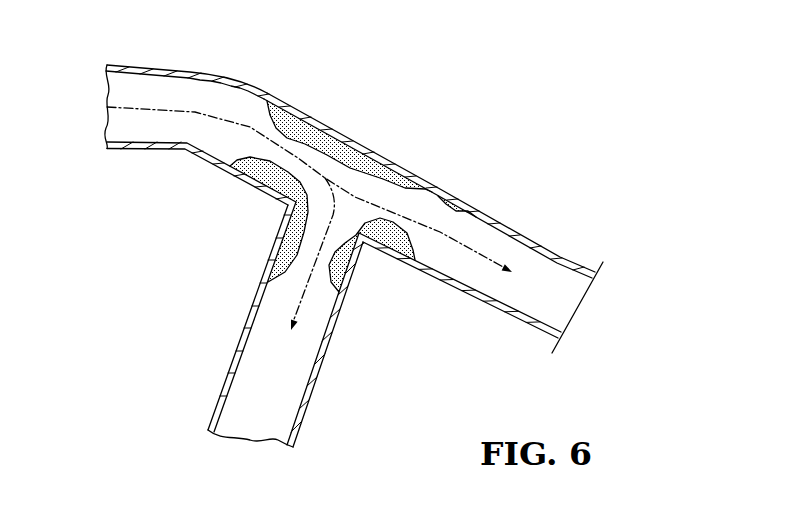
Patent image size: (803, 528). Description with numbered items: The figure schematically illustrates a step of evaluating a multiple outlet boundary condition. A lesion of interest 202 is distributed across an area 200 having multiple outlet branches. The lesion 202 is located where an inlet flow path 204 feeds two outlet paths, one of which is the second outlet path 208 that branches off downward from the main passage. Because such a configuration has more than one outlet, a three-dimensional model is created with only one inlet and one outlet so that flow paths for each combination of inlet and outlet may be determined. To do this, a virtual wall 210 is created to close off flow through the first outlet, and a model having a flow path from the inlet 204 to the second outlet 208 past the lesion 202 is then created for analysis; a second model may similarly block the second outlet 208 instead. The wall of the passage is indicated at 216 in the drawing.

The pipe assembly 200 is at (440, 152).
The deposits 202 is at (288, 244).
The inlet pipe 204 is at (148, 127).
The branch pipe 208 is at (277, 403).
The outlet 210 is at (580, 308).
The outer wall 216 is at (542, 242).